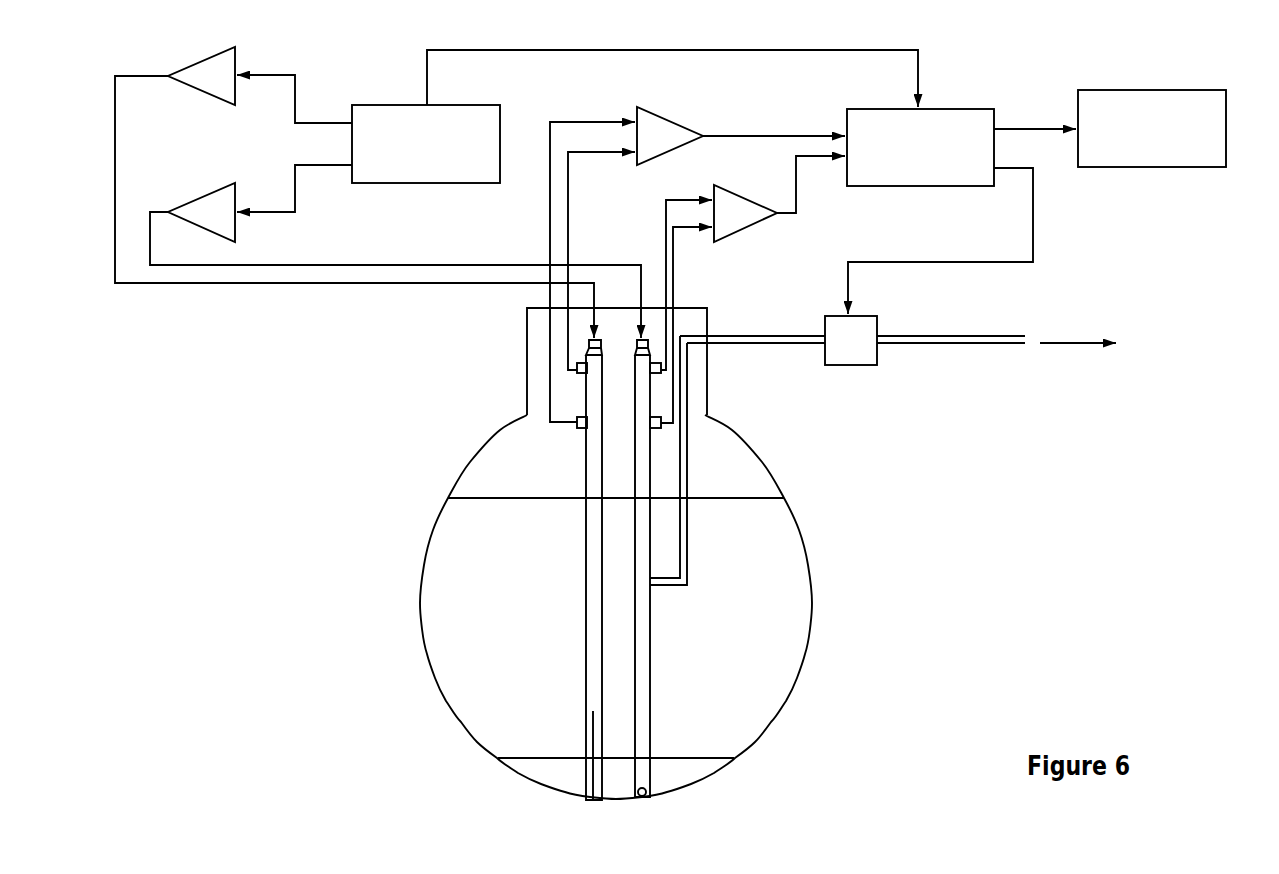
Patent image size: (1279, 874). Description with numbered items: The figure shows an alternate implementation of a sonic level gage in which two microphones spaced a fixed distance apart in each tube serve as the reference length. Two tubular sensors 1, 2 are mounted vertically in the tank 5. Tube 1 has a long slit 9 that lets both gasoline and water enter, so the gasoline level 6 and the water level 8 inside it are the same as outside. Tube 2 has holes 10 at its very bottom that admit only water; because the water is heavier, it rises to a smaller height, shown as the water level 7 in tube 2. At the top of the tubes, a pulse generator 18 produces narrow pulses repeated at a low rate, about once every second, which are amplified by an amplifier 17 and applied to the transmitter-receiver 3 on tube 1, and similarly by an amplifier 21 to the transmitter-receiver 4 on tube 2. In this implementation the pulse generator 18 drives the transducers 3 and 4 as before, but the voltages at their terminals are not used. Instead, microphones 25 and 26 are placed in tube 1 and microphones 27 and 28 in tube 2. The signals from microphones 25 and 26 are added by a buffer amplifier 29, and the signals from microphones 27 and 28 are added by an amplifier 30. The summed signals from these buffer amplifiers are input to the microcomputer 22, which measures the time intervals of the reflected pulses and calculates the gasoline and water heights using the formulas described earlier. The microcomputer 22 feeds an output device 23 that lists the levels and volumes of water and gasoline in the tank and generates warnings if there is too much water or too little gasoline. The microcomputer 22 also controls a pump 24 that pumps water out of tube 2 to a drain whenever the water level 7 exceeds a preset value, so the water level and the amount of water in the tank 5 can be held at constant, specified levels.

The tubular sensor 1 is at (588, 615).
The tubular sensor 2 is at (650, 620).
The transmitter-receiver 3 is at (588, 345).
The transmitter-receiver 4 is at (652, 346).
The tank 5 is at (812, 583).
The gasoline level 6 is at (542, 488).
The water level in tube 2 7 is at (645, 563).
The water level 8 is at (695, 753).
The long slit 9 is at (593, 717).
The holes 10 is at (647, 795).
The amplifier 17 is at (201, 76).
The pulse generator 18 is at (426, 144).
The amplifier 21 is at (201, 212).
The microcomputer 22 is at (920, 147).
The output device 23 is at (1152, 128).
The pump 24 is at (851, 340).
The microphone 25 is at (575, 372).
The microphone 26 is at (566, 435).
The microphone 27 is at (652, 375).
The microphone 28 is at (666, 431).
The buffer amplifier 29 is at (670, 136).
The amplifier 30 is at (745, 213).